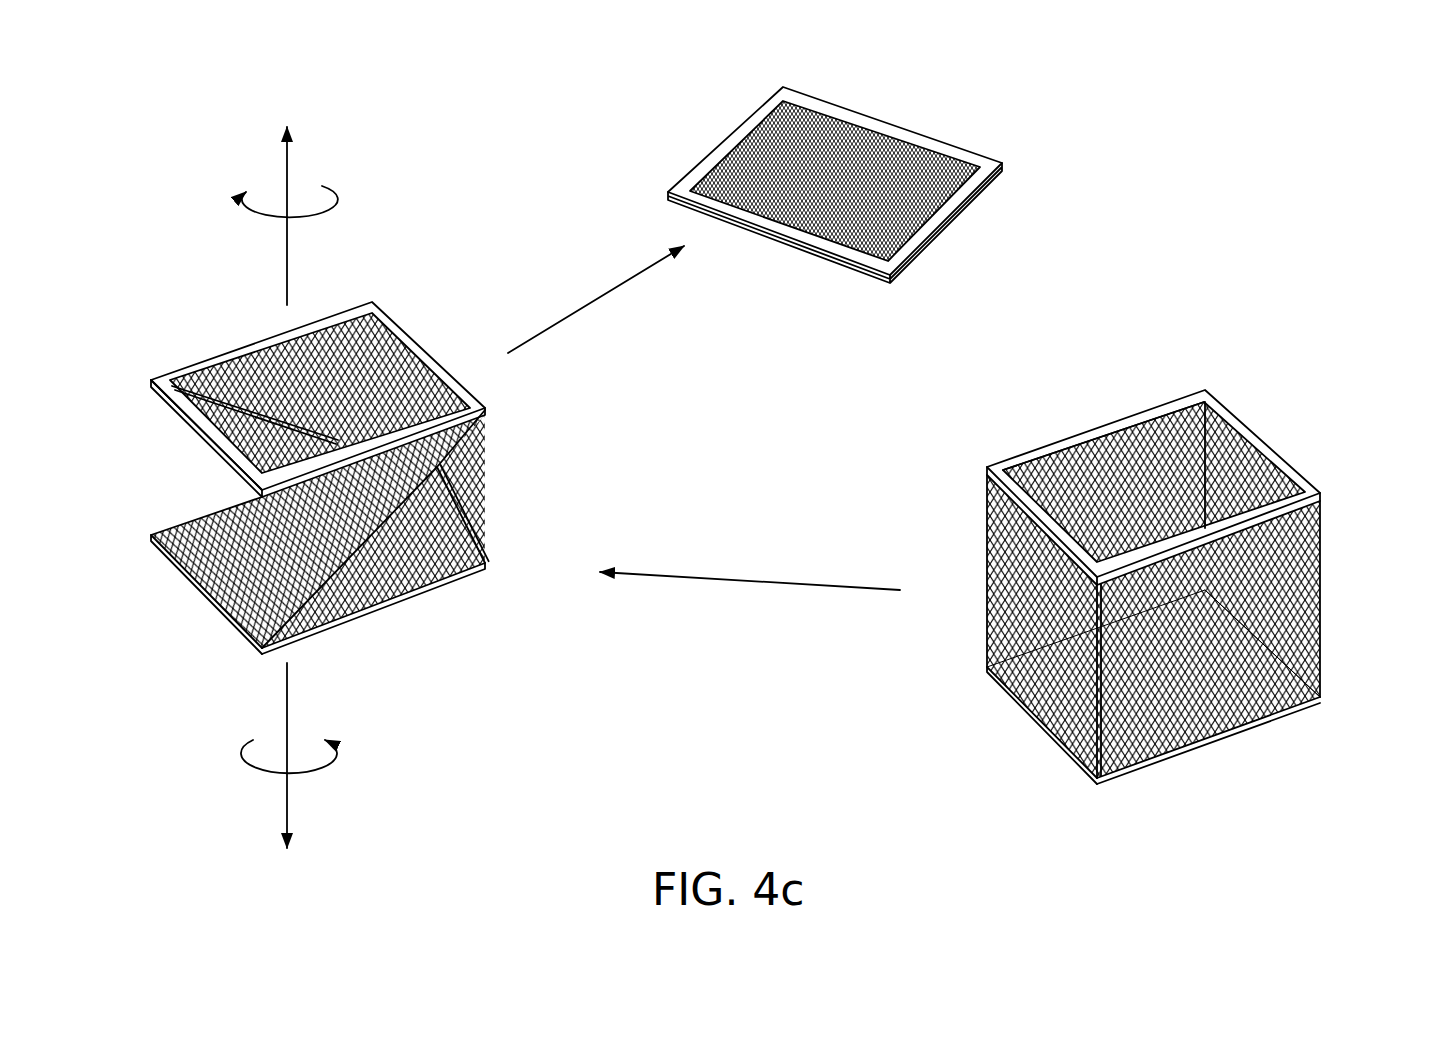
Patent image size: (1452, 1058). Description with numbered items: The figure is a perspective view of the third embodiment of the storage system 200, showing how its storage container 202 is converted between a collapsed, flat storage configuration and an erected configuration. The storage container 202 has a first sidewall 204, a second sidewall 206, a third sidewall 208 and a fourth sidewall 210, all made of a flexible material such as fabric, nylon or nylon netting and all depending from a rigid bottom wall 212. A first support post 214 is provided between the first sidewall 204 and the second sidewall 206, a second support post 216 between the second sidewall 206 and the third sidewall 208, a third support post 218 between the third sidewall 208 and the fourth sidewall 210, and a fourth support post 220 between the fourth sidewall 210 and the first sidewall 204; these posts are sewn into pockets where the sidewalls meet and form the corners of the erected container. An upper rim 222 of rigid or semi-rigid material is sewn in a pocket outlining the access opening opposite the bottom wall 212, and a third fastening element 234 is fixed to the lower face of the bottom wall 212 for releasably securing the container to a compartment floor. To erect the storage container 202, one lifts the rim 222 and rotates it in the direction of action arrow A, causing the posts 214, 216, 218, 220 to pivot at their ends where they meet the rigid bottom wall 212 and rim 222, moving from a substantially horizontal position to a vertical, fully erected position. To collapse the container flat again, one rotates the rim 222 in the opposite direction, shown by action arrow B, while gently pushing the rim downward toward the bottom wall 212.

The storage system 200 is at (356, 126).
The storage container 202 is at (1240, 408).
The first sidewall 204 is at (217, 422).
The second sidewall 206 is at (324, 360).
The third sidewall 208 is at (463, 387).
The fourth sidewall 210 is at (252, 552).
The bottom wall 212 is at (1180, 751).
The first support post 214 is at (203, 387).
The second support post 216 is at (460, 498).
The third support post 218 is at (310, 615).
The fourth support post 220 is at (210, 508).
The upper rim 222 is at (236, 347).
The third fastening element 234 is at (1033, 722).
The action arrow A is at (340, 200).
The action arrow B is at (323, 773).